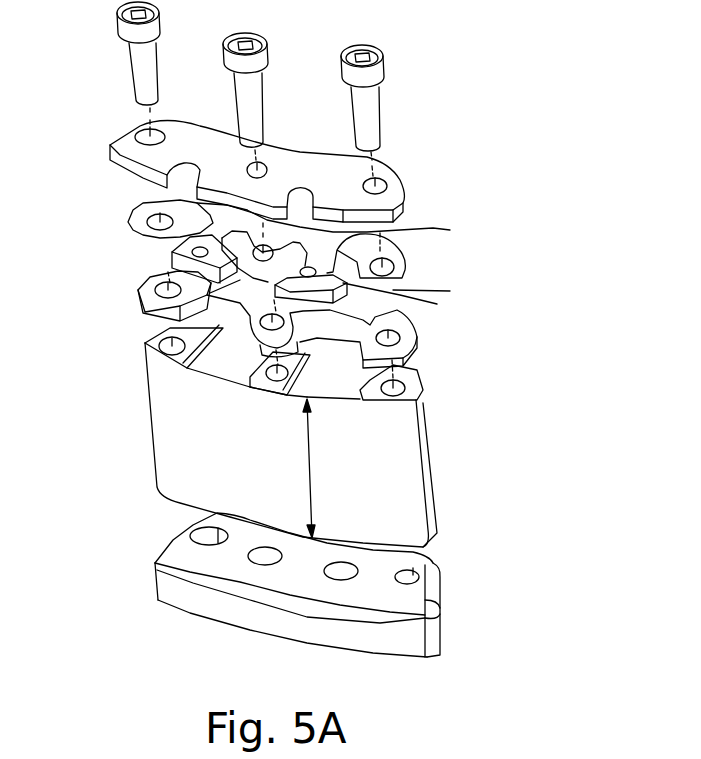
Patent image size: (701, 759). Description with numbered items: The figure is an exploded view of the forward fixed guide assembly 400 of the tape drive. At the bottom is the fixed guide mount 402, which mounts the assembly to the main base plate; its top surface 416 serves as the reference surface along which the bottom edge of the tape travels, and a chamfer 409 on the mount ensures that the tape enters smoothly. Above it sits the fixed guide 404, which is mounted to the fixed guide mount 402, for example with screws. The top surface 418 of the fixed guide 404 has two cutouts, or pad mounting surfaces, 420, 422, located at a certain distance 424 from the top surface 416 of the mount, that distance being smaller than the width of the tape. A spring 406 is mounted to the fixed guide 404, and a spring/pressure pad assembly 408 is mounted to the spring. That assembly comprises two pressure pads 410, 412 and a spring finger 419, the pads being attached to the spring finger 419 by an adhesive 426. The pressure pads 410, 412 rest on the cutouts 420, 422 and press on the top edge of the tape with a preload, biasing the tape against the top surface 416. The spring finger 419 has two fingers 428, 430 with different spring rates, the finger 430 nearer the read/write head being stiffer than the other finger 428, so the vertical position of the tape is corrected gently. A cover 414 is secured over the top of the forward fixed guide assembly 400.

The forward fixed guide assembly 400 is at (455, 168).
The fixed guide mount 402 is at (433, 630).
The fixed guide 404 is at (417, 463).
The spring 406 is at (410, 343).
The spring/pressure pad assembly 408 is at (405, 264).
The chamfer 409 is at (437, 580).
The pressure pad 410 is at (172, 252).
The pressure pad 412 is at (350, 300).
The cover 414 is at (388, 164).
The top surface of the fixed guide mount 416 is at (167, 540).
The top surface of the fixed guide 418 is at (408, 378).
The spring finger 419 is at (147, 203).
The cutout 420 is at (215, 368).
The cutout 422 is at (352, 398).
The distance 424 is at (317, 490).
The adhesive 426 is at (150, 294).
The finger 428 is at (213, 224).
The finger 430 is at (392, 232).